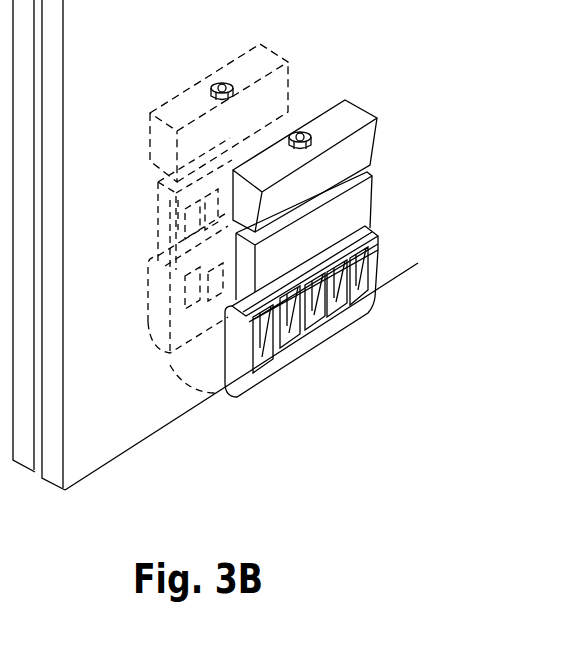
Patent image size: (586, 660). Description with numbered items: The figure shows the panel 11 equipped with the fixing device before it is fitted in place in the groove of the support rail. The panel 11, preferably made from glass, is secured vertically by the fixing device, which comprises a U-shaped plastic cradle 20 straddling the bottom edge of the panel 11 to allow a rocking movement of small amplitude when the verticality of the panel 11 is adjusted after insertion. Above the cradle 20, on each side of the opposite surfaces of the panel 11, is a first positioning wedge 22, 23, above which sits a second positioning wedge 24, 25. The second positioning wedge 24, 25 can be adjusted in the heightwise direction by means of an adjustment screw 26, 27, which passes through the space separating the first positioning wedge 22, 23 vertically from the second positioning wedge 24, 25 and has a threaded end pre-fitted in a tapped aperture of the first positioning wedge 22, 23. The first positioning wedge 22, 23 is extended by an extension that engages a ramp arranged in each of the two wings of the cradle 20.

The panel 11 is at (90, 448).
The cradle 20 is at (238, 368).
The first positioning wedge 22 is at (165, 222).
The first positioning wedge 23 is at (352, 210).
The second positioning wedge 24 is at (165, 148).
The second positioning wedge 25 is at (354, 142).
The adjustment screw 26 is at (222, 82).
The adjustment screw 27 is at (301, 131).